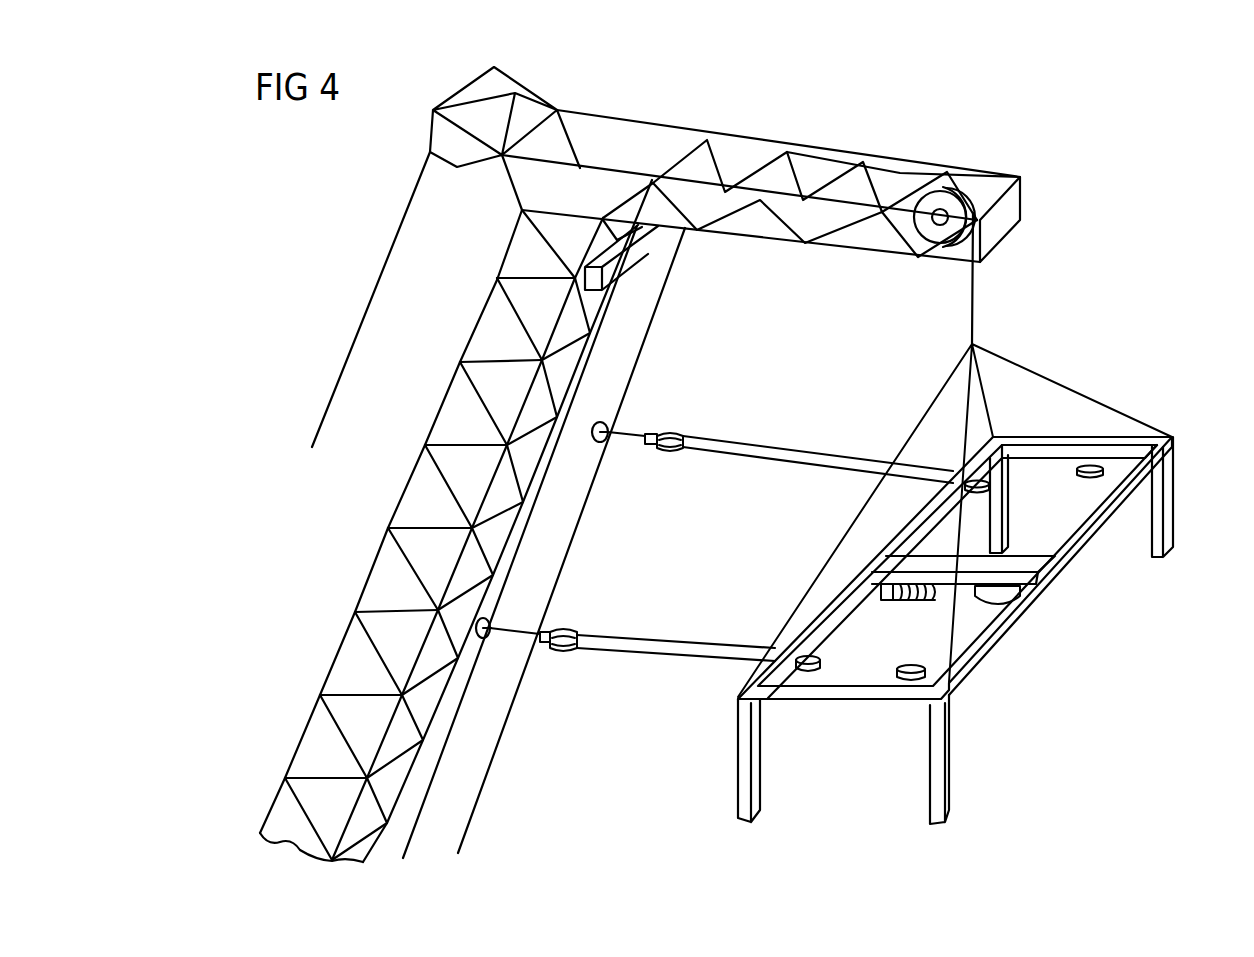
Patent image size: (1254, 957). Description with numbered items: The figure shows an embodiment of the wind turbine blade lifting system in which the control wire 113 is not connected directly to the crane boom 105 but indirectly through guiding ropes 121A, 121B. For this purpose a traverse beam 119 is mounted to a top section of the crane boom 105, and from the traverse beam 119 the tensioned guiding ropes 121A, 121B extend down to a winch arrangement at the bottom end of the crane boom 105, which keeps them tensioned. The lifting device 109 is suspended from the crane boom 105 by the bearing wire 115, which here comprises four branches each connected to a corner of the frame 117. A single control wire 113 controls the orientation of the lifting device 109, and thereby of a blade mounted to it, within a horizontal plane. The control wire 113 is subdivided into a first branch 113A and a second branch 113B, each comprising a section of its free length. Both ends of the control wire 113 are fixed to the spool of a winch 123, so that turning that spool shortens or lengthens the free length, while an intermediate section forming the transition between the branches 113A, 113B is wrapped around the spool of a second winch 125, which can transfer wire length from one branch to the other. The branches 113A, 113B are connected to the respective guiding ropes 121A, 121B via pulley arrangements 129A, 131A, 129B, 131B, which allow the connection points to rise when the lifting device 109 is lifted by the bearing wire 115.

The crane boom 105 is at (398, 562).
The lifting device 109 is at (969, 580).
The control wire 113 is at (811, 467).
The first branch 113A is at (671, 657).
The second branch 113B is at (747, 458).
The bearing wire 115 is at (973, 300).
The frame 117 is at (1006, 639).
The traverse beam 119 is at (645, 250).
The guiding rope 121A is at (440, 777).
The guiding rope 121B is at (503, 742).
The winch 123 is at (984, 596).
The second winch 125 is at (910, 602).
The first pulley 129A is at (570, 630).
The pulley 129B is at (674, 432).
The second pulley 131A is at (490, 638).
The pulley 131B is at (607, 445).